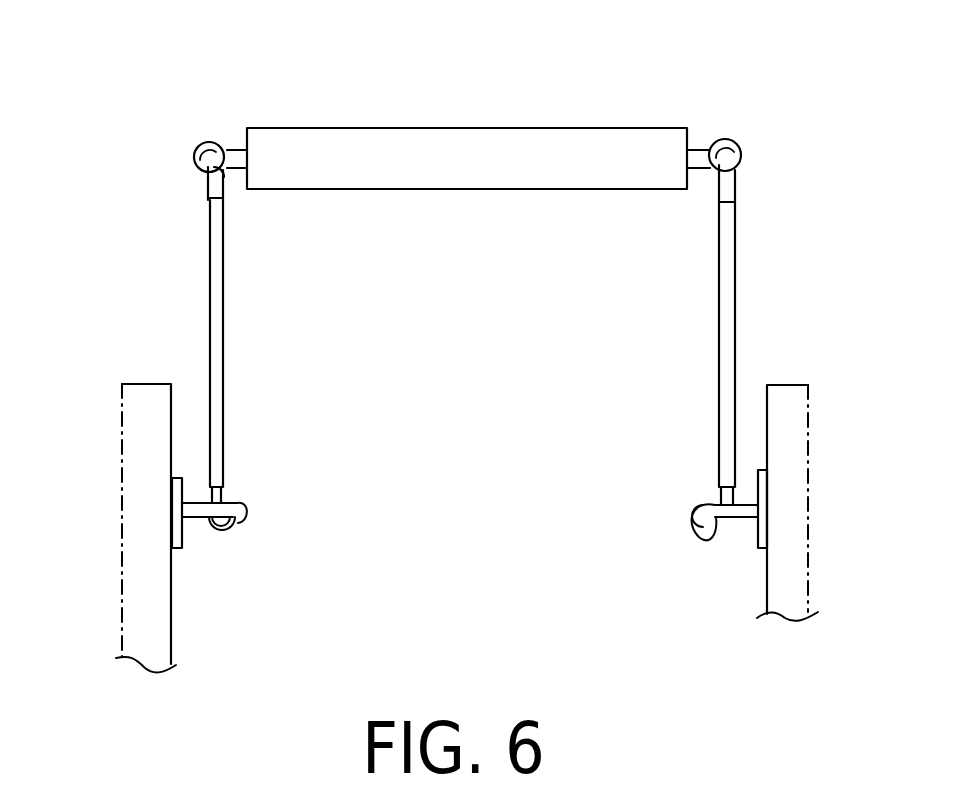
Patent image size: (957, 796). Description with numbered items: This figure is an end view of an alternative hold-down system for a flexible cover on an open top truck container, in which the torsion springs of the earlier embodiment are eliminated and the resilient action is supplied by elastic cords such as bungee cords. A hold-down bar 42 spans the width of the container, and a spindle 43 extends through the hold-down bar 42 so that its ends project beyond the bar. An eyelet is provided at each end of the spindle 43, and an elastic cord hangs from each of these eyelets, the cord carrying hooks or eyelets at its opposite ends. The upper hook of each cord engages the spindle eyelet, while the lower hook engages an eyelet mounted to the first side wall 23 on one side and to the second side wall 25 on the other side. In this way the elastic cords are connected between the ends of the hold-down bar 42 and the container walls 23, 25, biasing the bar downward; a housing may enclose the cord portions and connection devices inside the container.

The first side wall 23 is at (138, 438).
The second side wall 25 is at (790, 428).
The hold-down bar 42 is at (538, 140).
The spindle 43 is at (702, 140).